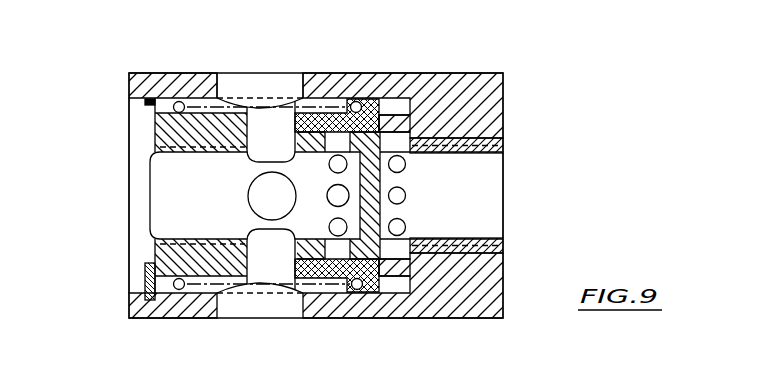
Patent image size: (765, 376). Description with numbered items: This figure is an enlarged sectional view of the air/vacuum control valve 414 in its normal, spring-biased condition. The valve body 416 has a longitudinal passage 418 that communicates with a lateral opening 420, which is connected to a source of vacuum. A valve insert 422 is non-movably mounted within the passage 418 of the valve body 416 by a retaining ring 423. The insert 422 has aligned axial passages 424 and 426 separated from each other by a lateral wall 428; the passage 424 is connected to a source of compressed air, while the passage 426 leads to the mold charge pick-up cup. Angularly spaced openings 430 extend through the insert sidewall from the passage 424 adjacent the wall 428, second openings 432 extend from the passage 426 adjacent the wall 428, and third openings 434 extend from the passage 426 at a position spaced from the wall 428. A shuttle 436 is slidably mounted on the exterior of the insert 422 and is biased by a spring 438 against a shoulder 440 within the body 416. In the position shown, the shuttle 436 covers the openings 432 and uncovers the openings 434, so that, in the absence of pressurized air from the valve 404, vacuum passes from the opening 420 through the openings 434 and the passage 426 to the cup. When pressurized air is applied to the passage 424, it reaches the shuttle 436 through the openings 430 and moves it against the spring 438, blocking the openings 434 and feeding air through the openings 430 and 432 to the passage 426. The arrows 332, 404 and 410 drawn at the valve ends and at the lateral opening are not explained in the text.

The first flow direction 332 is at (160, 193).
The valve 404 is at (480, 197).
The outlet port 410 is at (258, 92).
The air/vacuum control valve 414 is at (524, 105).
The valve body 416 is at (468, 95).
The longitudinal passage 418 is at (463, 243).
The lateral opening 420 is at (218, 92).
The valve insert 422 is at (173, 137).
The retaining ring 423 is at (147, 282).
The axial passage 424 is at (473, 150).
The axial passage 426 is at (178, 245).
The lateral wall 428 is at (368, 222).
The openings 430 is at (400, 167).
The second openings 432 is at (350, 104).
The third openings 434 is at (256, 262).
The shuttle 436 is at (304, 268).
The spring 438 is at (170, 116).
The shoulder 440 is at (380, 97).